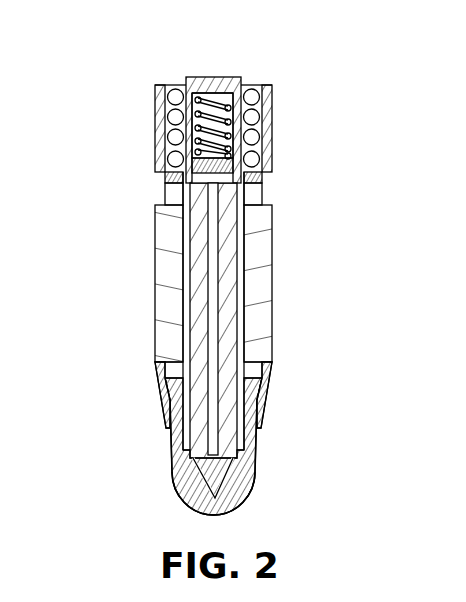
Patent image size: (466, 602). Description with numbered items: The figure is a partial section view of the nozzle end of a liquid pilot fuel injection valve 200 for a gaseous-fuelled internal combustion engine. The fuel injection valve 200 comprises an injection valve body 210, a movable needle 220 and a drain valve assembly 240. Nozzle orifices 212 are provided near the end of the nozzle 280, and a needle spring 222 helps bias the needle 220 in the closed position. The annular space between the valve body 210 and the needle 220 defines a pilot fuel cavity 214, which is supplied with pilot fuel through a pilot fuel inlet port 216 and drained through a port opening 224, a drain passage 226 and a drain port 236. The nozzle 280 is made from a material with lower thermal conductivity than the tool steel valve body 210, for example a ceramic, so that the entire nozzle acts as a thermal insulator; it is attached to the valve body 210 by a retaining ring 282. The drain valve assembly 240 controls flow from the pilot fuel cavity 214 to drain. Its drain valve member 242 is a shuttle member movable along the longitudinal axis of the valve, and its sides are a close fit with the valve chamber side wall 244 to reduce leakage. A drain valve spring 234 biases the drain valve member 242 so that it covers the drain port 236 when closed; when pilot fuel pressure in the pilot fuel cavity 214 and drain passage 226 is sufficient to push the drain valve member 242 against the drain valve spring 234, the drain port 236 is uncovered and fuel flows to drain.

The fuel injection valve 200 is at (143, 76).
The injection valve body 210 is at (170, 247).
The nozzle orifices 212 is at (177, 483).
The pilot fuel cavity 214 is at (163, 362).
The pilot fuel inlet port 216 is at (262, 272).
The movable needle 220 is at (195, 332).
The needle spring 222 is at (160, 142).
The port opening 224 is at (257, 430).
The drain passage 226 is at (217, 352).
The drain valve spring 234 is at (257, 97).
The drain port 236 is at (243, 163).
The drain valve assembly 240 is at (265, 85).
The drain valve member 242 is at (238, 147).
The valve chamber side wall 244 is at (247, 125).
The nozzle 280 is at (170, 450).
The retaining ring 282 is at (185, 392).